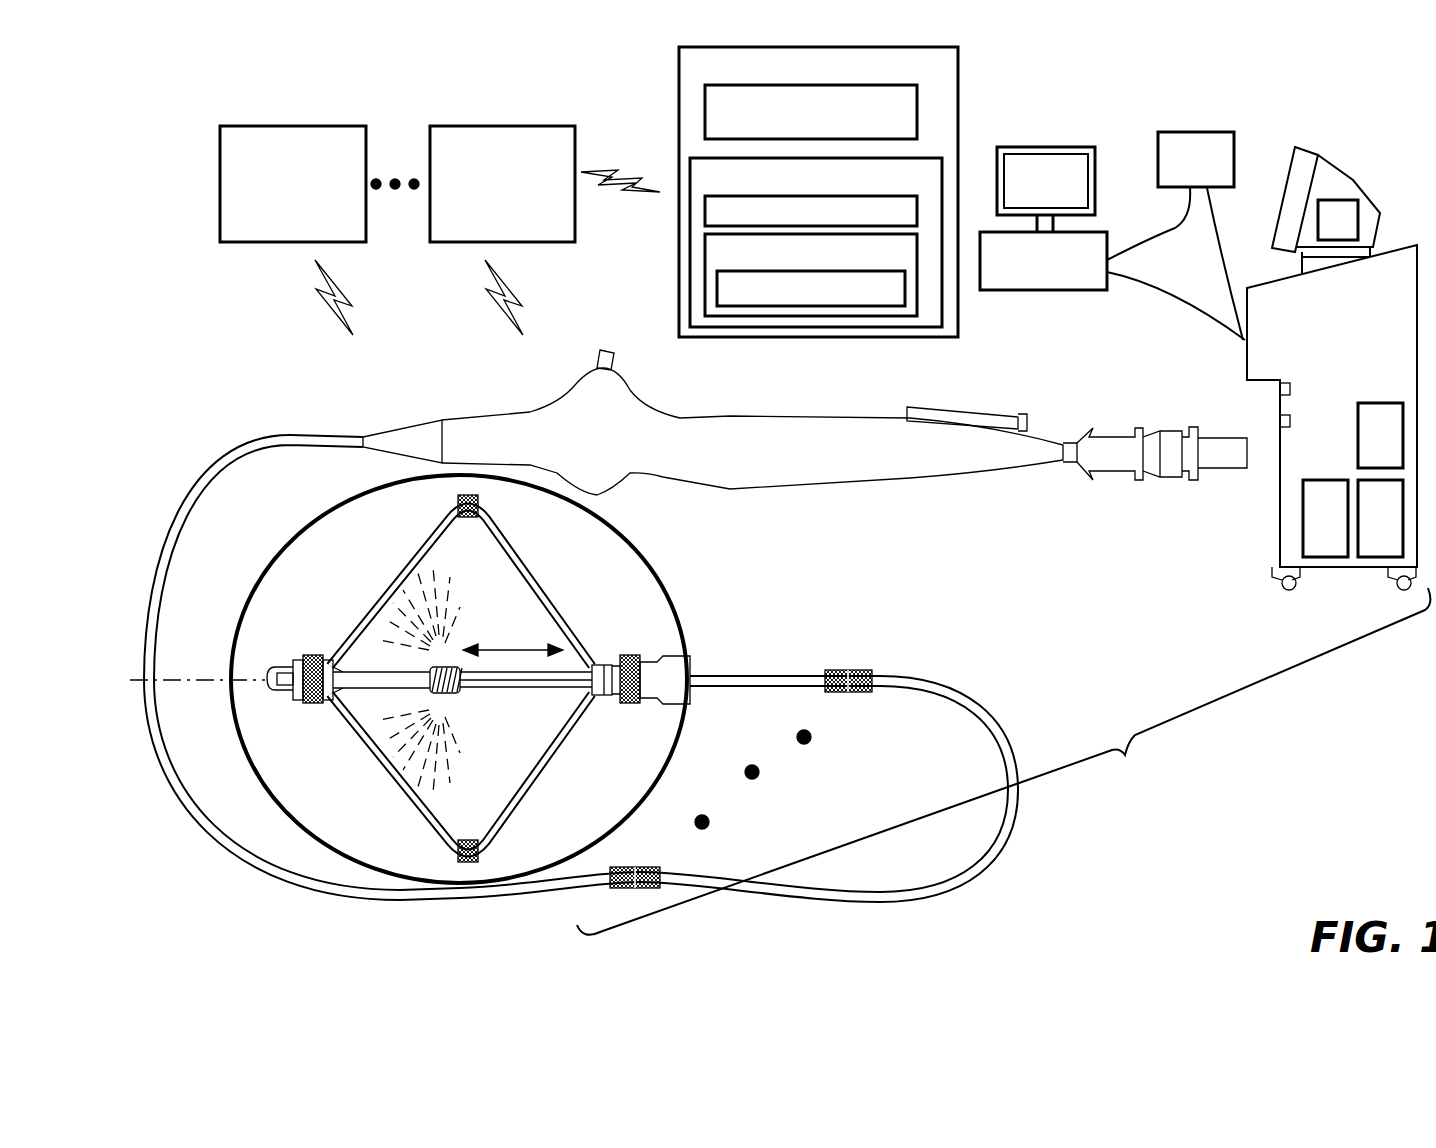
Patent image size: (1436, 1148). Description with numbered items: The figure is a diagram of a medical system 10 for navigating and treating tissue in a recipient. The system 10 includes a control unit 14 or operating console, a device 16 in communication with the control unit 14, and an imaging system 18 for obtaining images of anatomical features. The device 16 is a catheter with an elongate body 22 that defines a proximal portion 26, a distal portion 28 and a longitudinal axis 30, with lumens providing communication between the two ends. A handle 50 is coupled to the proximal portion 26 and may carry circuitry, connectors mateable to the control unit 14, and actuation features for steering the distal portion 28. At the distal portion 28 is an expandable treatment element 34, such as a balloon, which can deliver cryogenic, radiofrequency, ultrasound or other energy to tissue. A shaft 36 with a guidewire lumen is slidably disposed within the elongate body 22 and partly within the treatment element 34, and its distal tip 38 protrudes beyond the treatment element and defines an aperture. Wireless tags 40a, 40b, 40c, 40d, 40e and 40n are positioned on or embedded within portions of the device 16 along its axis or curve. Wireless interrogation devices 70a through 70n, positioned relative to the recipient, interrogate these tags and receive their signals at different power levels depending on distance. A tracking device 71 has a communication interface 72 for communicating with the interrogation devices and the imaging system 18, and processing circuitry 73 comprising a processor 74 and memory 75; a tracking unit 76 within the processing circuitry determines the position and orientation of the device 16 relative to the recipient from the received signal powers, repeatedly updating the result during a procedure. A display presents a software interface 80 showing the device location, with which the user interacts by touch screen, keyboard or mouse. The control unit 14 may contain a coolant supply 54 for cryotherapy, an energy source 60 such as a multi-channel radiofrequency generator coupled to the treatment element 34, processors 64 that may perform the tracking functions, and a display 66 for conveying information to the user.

The medical system 10 is at (1396, 70).
The control unit 14 is at (1332, 367).
The device 16 is at (183, 485).
The imaging system 18 is at (1196, 159).
The elongate body 22 is at (197, 833).
The proximal portion 26 is at (293, 438).
The distal portion 28 is at (663, 657).
The longitudinal axis 30 is at (190, 678).
The treatment element 34 is at (471, 680).
The shaft 36 is at (377, 686).
The distal tip 38 is at (272, 692).
The wireless tag 40a is at (313, 654).
The wireless tag 40b is at (628, 654).
The wireless tag 40c is at (457, 498).
The wireless tag 40d is at (455, 855).
The wireless tag 40e is at (852, 668).
The wireless tag 40n is at (650, 867).
The handle 50 is at (697, 418).
The supply 54 is at (1380, 480).
The energy source 60 is at (1325, 518).
The processors 64 is at (1338, 220).
The display 66 is at (1316, 210).
The wireless interrogation device 70a is at (293, 230).
The wireless interrogation device 70n is at (545, 230).
The tracking device 71 is at (893, 192).
The communication interface 72 is at (811, 112).
The processing circuitry 73 is at (898, 212).
The processor 74 is at (811, 211).
The memory 75 is at (906, 207).
The tracking unit 76 is at (912, 202).
The software interface 80 is at (1063, 166).